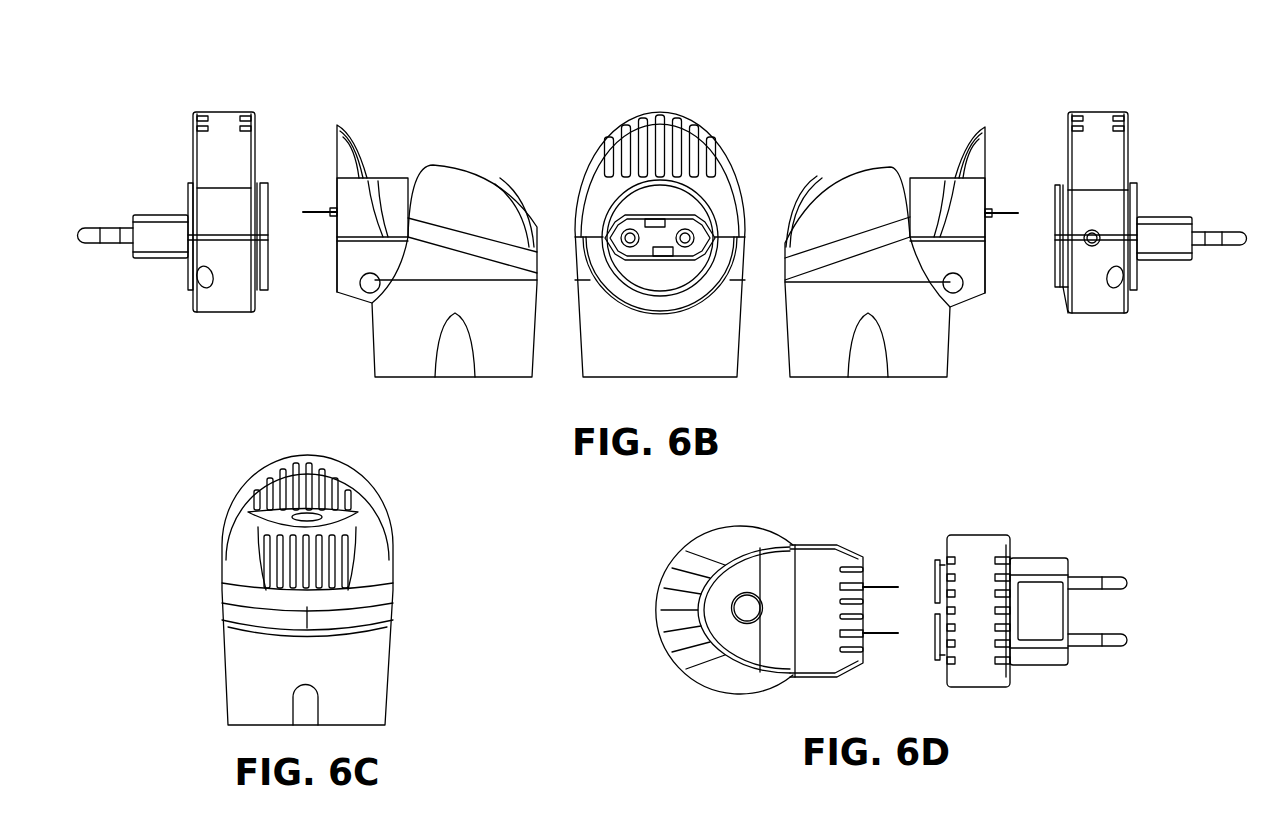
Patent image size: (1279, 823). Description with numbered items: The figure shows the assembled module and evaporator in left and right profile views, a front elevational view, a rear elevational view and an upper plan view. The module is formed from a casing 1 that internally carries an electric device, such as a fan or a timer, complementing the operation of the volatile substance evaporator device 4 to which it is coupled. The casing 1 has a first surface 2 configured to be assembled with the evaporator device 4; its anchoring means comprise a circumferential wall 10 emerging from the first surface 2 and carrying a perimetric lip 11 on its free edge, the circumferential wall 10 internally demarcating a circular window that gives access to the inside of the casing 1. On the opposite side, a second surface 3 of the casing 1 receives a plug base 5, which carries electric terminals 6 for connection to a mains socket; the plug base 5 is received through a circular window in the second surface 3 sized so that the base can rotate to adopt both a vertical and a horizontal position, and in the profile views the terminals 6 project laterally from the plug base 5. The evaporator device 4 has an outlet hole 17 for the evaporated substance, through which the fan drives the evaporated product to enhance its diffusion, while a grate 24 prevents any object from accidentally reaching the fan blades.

In FIG. 6B, the casing 1 is at (222, 128).
In FIG. 6D, the casing 1 is at (972, 550).
In FIG. 6B, the first surface 2 is at (257, 150).
In FIG. 6B, the second surface 3 is at (193, 163).
In FIG. 6B, the volatile substance evaporator device 4 is at (478, 163).
In FIG. 6C, the volatile substance evaporator device 4 is at (400, 542).
In FIG. 6D, the volatile substance evaporator device 4 is at (777, 610).
In FIG. 6B, the plug base 5 is at (160, 252).
In FIG. 6D, the plug base 5 is at (1040, 590).
In FIG. 6B, the electric terminals 6 is at (112, 243).
In FIG. 6D, the electric terminals 6 is at (1113, 586).
In FIG. 6B, the circumferential wall 10 is at (1067, 310).
In FIG. 6D, the circumferential wall 10 is at (937, 652).
In FIG. 6B, the perimetric lip 11 is at (1058, 280).
In FIG. 6D, the perimetric lip 11 is at (937, 562).
In FIG. 6D, the outlet hole 17 is at (749, 604).
In FIG. 6B, the grate 24 is at (353, 152).